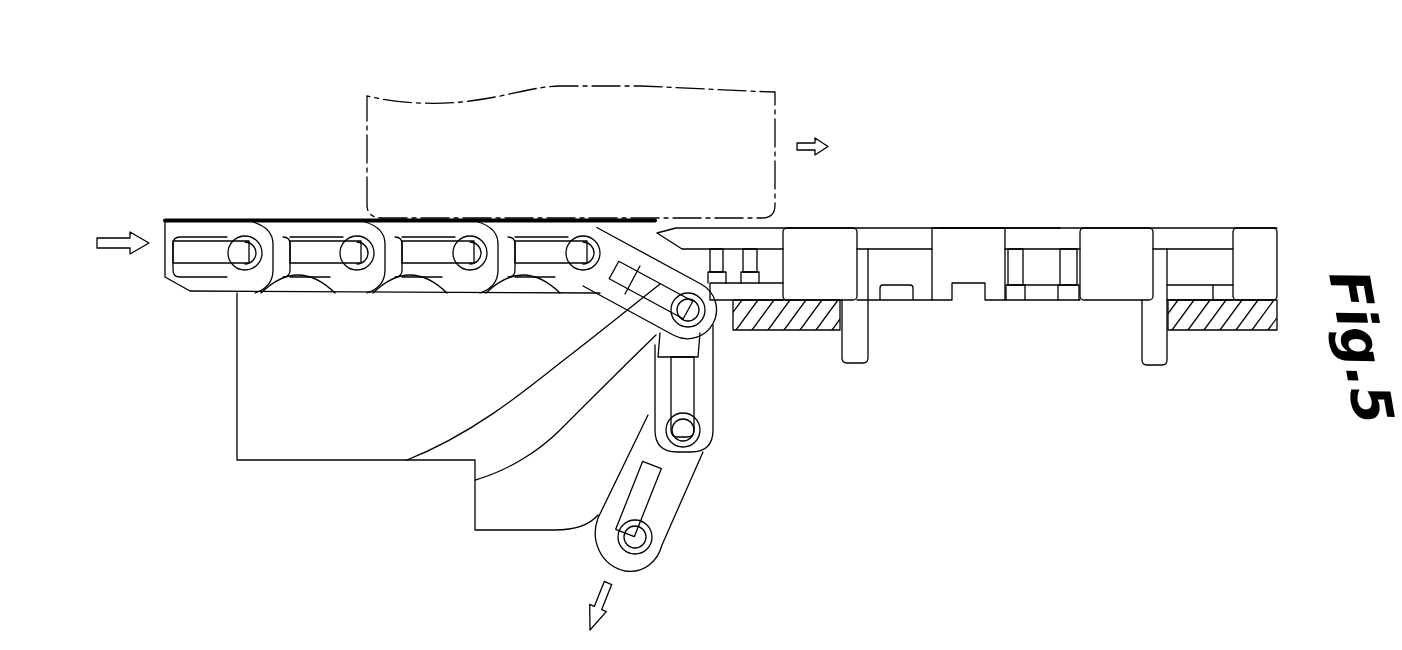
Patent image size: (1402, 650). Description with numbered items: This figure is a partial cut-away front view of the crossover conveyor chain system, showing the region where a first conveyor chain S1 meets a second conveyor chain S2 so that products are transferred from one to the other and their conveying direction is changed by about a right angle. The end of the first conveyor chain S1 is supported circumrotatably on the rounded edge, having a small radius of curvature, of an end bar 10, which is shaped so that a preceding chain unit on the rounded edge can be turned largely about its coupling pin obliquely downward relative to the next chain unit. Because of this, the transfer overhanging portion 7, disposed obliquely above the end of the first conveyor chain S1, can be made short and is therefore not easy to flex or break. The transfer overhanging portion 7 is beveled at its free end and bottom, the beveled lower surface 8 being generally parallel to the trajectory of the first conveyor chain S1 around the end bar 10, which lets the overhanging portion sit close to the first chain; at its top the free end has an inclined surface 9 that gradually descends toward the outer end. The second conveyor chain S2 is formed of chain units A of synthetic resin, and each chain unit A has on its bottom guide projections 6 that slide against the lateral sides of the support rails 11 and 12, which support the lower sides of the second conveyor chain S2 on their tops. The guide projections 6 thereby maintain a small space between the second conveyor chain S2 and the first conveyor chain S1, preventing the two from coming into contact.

The first conveyor chain S1 is at (180, 221).
The second conveyor chain S2 is at (1003, 228).
The chain unit A is at (857, 228).
The guide projections 6 is at (858, 325).
The transfer overhanging portion 7 is at (747, 236).
The beveled lower surface 8 is at (407, 460).
The inclined surface 9 is at (660, 232).
The end bar 10 is at (475, 480).
The support rail 11 is at (788, 308).
The support rail 12 is at (1218, 315).